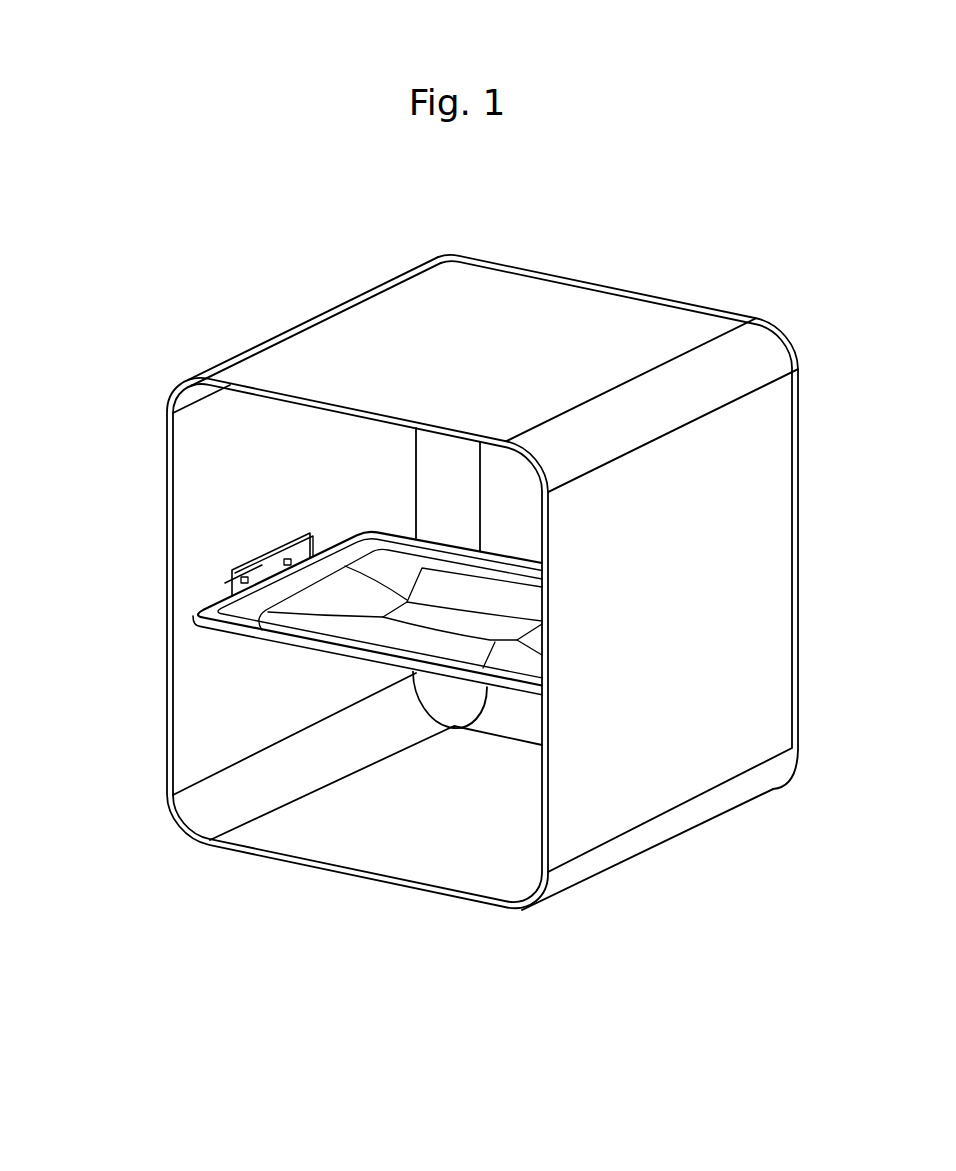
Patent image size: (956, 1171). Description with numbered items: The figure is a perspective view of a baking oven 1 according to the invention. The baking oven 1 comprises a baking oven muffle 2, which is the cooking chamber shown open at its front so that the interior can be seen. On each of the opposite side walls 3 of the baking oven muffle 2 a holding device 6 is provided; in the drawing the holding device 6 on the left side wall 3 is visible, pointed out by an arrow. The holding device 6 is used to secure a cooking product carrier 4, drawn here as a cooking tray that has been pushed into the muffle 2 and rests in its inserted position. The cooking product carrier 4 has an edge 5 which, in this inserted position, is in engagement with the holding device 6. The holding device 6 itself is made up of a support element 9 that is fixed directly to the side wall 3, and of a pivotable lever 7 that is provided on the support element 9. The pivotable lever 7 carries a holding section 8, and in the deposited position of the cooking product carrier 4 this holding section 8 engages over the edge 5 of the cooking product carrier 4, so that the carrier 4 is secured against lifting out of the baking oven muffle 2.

The baking oven 1 is at (585, 907).
The baking oven muffle 2 is at (458, 853).
The side wall 3 is at (208, 710).
The cooking product carrier 4 is at (448, 648).
The edge 5 is at (207, 607).
The holding device 6 is at (195, 526).
The pivotable lever 7 is at (268, 577).
The holding section 8 is at (288, 562).
The support element 9 is at (300, 548).